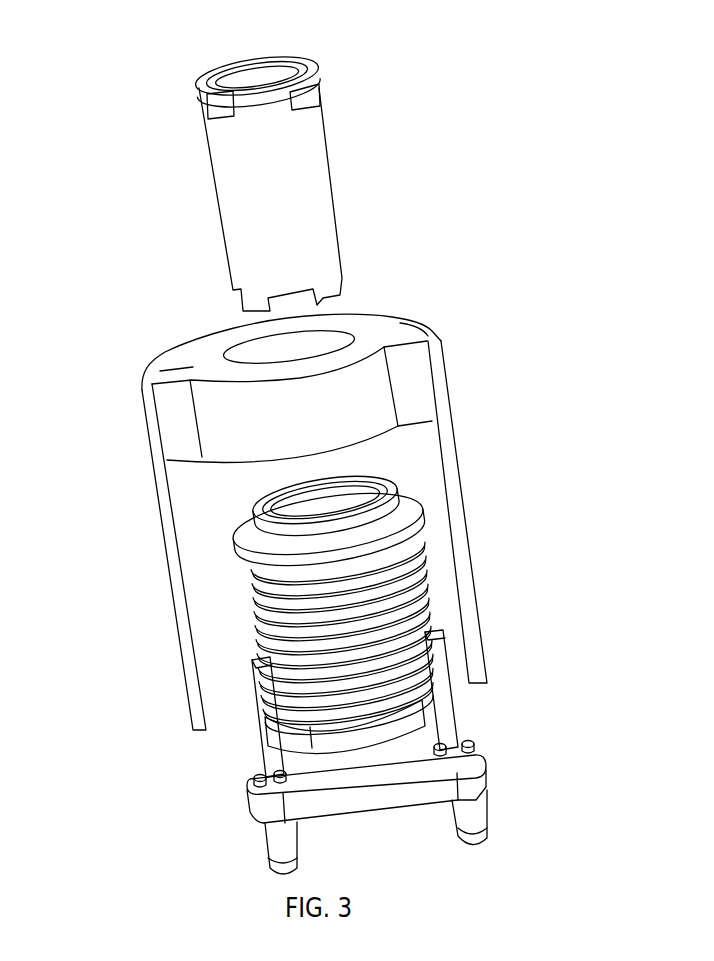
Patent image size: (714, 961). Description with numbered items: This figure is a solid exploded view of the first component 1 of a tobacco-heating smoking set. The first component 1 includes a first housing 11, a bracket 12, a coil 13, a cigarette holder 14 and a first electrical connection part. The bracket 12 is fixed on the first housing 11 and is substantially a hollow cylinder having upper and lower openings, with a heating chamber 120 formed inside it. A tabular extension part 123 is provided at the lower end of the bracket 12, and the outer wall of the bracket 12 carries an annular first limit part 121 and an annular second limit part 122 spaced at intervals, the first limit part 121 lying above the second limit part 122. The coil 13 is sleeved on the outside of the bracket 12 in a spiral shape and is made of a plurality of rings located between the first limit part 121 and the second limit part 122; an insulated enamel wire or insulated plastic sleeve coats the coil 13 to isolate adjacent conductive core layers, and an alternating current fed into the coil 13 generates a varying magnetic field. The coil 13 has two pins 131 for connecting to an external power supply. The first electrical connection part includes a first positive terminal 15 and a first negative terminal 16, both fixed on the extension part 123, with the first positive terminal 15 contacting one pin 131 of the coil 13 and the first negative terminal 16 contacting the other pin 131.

The first component 1 is at (40, 52).
The first housing 11 is at (457, 447).
The bracket 12 is at (572, 478).
The heating chamber 120 is at (348, 497).
The first limit part 121 is at (418, 533).
The second limit part 122 is at (438, 701).
The extension part 123 is at (437, 680).
The coil 13 is at (253, 630).
The pins 131 is at (257, 758).
The cigarette holder 14 is at (343, 219).
The first positive terminal 15 is at (248, 789).
The first negative terminal 16 is at (470, 742).